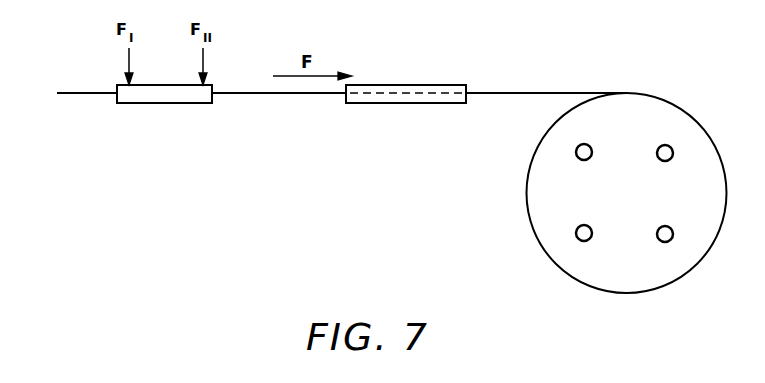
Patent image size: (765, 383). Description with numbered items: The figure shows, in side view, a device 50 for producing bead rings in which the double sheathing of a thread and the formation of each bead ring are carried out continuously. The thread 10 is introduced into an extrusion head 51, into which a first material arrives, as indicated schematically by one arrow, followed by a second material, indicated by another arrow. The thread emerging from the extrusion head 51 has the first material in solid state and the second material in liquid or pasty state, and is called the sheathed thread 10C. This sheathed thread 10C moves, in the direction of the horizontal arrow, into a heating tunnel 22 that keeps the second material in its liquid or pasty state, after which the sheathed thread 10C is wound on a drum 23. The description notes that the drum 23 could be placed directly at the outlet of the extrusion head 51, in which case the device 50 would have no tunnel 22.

The thread 10 is at (63, 71).
The sheathed thread 10C is at (266, 93).
The extrusion head 51 is at (158, 103).
The heating tunnel 22 is at (393, 103).
The device 50 is at (597, 70).
The drum 23 is at (530, 210).